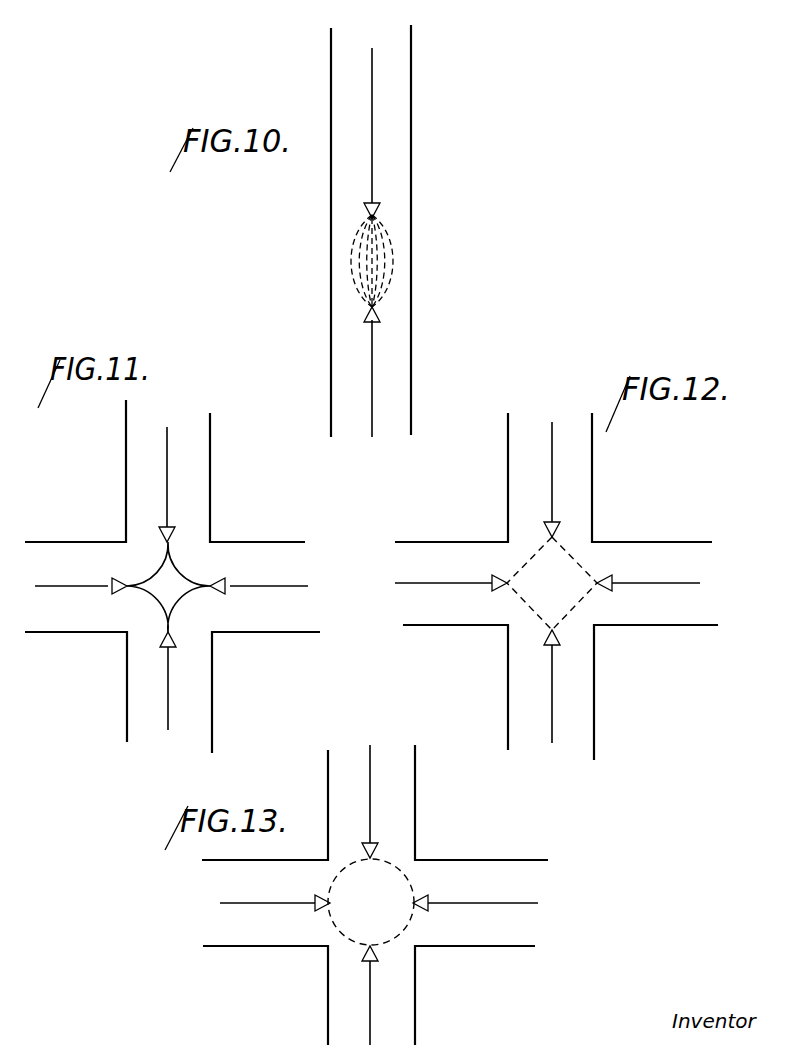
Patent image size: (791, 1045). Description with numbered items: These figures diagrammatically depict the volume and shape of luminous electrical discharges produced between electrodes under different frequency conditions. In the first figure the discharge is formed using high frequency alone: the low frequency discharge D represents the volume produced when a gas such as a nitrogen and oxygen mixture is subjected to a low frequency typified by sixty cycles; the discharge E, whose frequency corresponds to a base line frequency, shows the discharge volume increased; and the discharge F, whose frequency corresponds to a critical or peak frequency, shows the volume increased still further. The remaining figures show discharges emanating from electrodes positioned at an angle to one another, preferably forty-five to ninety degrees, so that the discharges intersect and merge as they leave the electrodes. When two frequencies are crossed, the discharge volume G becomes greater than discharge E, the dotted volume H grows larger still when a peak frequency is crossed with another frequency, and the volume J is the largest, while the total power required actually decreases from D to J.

In FIG. 10, the low frequency discharge D is at (378, 242).
In FIG. 10, the high frequency discharge at base line frequency E is at (385, 265).
In FIG. 10, the high frequency discharge at critical frequency F is at (363, 242).
In FIG. 11, the discharge volume G is at (180, 560).
In FIG. 12, the discharge volume H is at (566, 547).
In FIG. 13, the discharge volume J is at (402, 858).